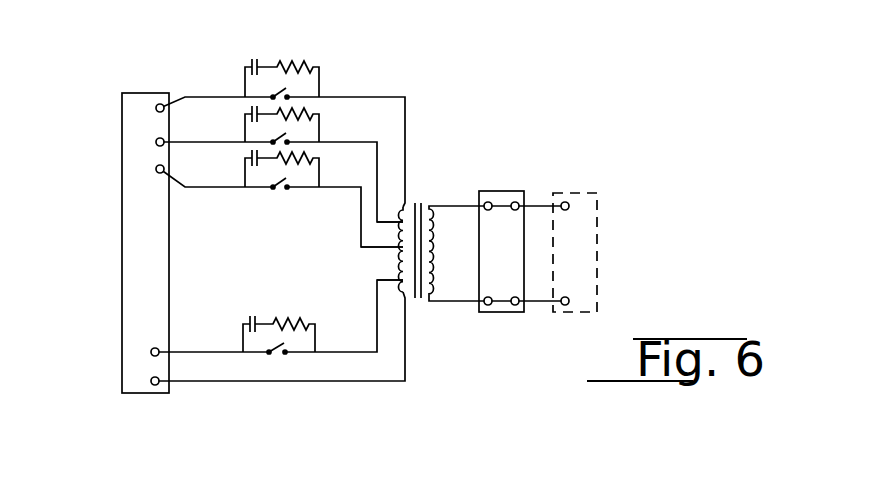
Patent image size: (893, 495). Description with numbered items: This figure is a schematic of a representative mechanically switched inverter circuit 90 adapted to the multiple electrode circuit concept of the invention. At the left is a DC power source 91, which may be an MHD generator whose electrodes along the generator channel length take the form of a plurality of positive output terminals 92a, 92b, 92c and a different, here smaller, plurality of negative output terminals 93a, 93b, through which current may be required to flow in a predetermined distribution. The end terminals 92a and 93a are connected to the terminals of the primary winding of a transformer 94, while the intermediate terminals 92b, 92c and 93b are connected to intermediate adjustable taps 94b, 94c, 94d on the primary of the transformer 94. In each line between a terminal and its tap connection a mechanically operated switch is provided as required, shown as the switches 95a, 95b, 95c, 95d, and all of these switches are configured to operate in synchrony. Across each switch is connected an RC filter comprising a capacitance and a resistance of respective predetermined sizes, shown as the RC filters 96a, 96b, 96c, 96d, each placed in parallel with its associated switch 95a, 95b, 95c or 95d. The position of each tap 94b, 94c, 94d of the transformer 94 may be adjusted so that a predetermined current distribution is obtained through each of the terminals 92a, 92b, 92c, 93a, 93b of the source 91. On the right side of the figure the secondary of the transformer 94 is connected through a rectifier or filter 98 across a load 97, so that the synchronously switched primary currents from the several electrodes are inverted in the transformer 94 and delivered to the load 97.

The mechanically switched inverter circuit 90 is at (470, 83).
The DC power source 91 is at (122, 258).
The positive output terminal 92a is at (155, 109).
The positive output terminal 92b is at (156, 144).
The positive output terminal 92c is at (156, 171).
The negative output terminal 93a is at (152, 384).
The negative output terminal 93b is at (151, 352).
The transformer 94 is at (419, 200).
The intermediate adjustable tap 94b is at (402, 226).
The intermediate adjustable tap 94c is at (402, 247).
The intermediate adjustable tap 94d is at (402, 283).
The mechanically operated switch 95a is at (286, 89).
The mechanically operated switch 95b is at (286, 135).
The mechanically operated switch 95c is at (286, 180).
The mechanically operated switch 95d is at (283, 342).
The RC filter 96a is at (266, 62).
The RC filter 96b is at (243, 129).
The RC filter 96c is at (243, 175).
The RC filter 96d is at (244, 322).
The load 97 is at (581, 192).
The rectifier or filter 98 is at (502, 191).